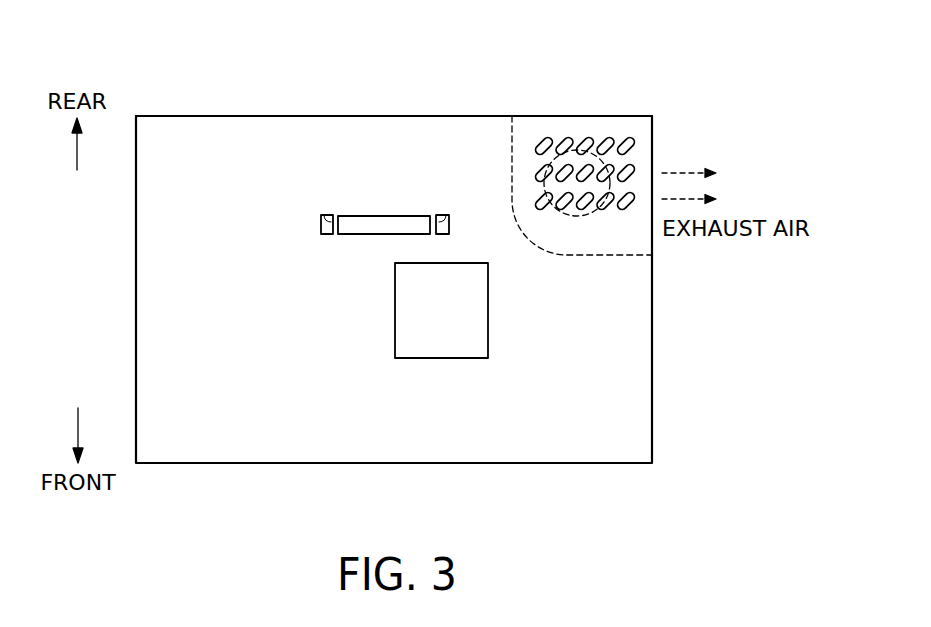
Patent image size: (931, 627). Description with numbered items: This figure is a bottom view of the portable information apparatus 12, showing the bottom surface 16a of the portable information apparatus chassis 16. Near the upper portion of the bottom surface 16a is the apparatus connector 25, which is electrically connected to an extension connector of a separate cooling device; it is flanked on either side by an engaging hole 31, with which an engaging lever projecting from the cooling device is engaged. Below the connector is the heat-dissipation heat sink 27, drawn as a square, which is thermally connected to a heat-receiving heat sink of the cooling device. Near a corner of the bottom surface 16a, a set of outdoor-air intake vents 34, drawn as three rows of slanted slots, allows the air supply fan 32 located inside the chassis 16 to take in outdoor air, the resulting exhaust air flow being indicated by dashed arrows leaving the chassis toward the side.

The portable information apparatus 12 is at (381, 30).
The portable information apparatus chassis 16 is at (165, 116).
The bottom surface 16a is at (248, 128).
The apparatus connector 25 is at (385, 226).
The heat-dissipation heat sink 27 is at (443, 345).
The engaging hole 31 is at (328, 215).
The air supply fan 32 is at (581, 233).
The outdoor-air intake vents 34 is at (582, 167).